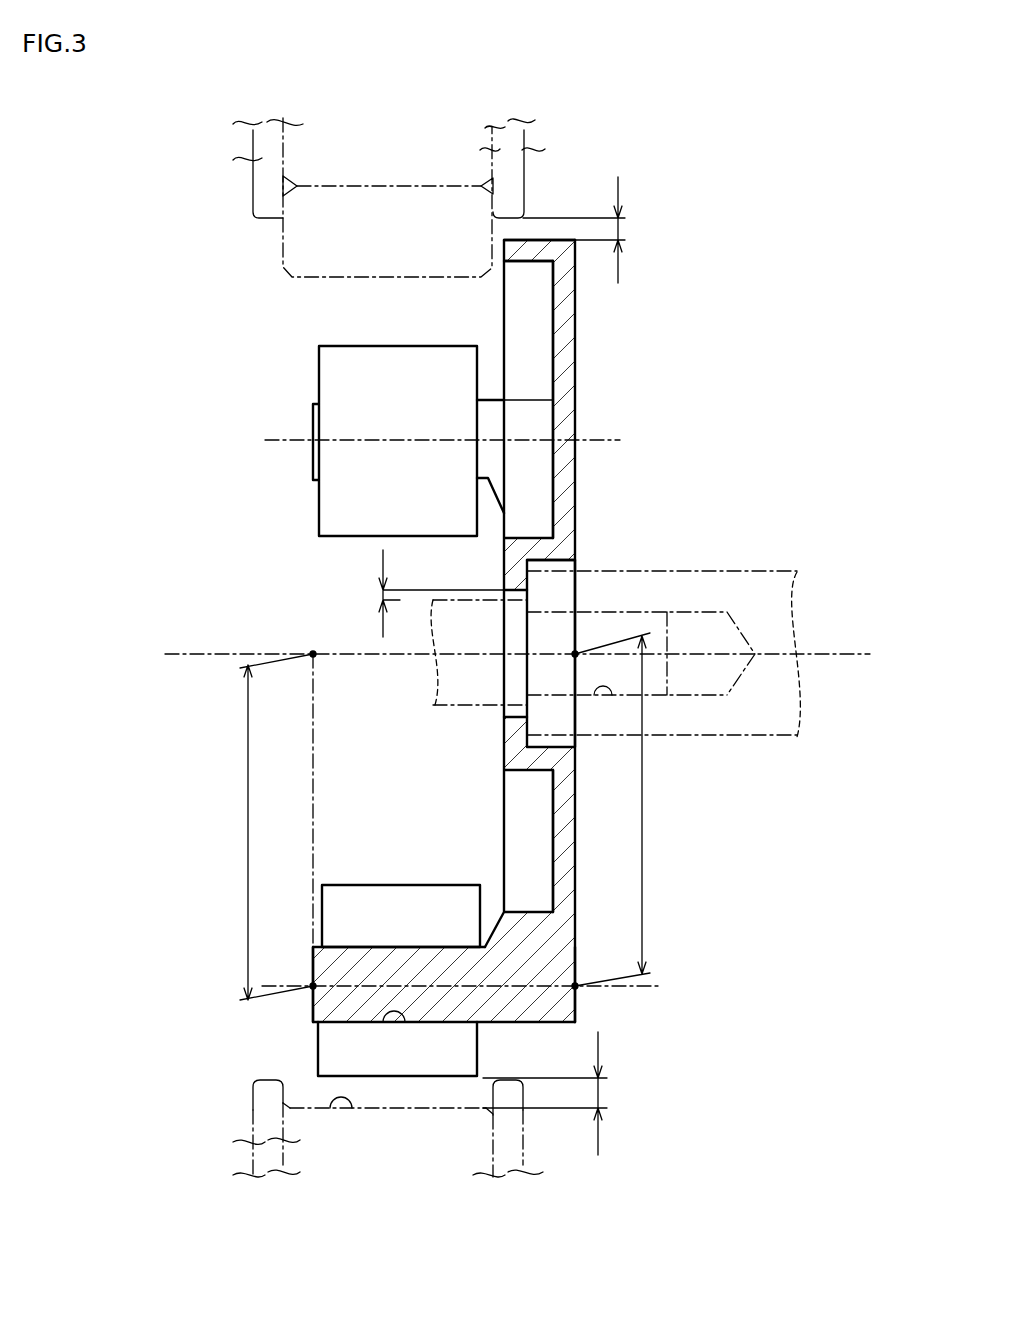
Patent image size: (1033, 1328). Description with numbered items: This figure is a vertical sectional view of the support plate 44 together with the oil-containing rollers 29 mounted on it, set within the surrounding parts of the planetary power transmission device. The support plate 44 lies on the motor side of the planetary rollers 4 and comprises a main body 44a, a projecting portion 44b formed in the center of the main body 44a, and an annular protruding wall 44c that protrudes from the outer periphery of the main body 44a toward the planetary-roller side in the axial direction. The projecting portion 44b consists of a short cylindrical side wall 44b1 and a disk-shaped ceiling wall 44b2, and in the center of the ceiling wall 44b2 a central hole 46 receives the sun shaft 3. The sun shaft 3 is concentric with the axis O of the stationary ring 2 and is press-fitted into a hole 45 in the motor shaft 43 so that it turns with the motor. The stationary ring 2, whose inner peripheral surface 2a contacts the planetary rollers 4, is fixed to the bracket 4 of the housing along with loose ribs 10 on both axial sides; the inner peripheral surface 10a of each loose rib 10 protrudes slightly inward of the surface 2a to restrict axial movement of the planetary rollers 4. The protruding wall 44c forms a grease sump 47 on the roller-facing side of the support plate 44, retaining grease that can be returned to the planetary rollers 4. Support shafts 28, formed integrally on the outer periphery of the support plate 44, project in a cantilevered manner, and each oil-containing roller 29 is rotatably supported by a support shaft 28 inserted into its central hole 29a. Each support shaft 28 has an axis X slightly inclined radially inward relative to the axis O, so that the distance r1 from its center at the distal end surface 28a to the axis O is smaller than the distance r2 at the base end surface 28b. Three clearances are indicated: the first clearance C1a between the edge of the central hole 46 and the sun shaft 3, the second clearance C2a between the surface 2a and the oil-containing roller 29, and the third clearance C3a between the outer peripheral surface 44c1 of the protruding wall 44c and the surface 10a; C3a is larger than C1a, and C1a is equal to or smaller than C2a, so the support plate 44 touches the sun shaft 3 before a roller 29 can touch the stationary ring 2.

The stationary ring 2 is at (252, 1142).
The inner peripheral surface of the stationary ring 2a is at (340, 1110).
The sun shaft 3 is at (660, 667).
The planetary rollers 4 is at (300, 248).
The loose ribs 10 is at (255, 157).
The inner peripheral surface of the loose rib 10a is at (268, 218).
The support shaft 28 is at (313, 462).
The distal end surface of the support shaft 28a is at (310, 1008).
The base end surface of the support shaft 28b is at (578, 1008).
The oil-containing roller 29 is at (335, 371).
The hole of the oil-containing roller 29a is at (400, 1023).
The motor shaft 43 is at (755, 718).
The support plate 44 is at (585, 403).
The main body of the support plate 44a is at (562, 348).
The projecting portion 44b is at (682, 446).
The side wall of the projecting portion 44b1 is at (533, 560).
The ceiling wall of the projecting portion 44b2 is at (515, 573).
The protruding wall 44c is at (513, 251).
The outer peripheral surface of the protruding wall 44c1 is at (518, 240).
The hole of the motor shaft 45 is at (613, 697).
The central hole 46 is at (518, 708).
The grease sump 47 is at (525, 360).
The first clearance C1a is at (417, 593).
The second clearance C2a is at (573, 1093).
The third clearance C3a is at (600, 230).
The axis of the stationary ring O is at (845, 652).
The axis of the support shaft X is at (268, 446).
The distance r1 is at (263, 825).
The distance r2 is at (627, 811).